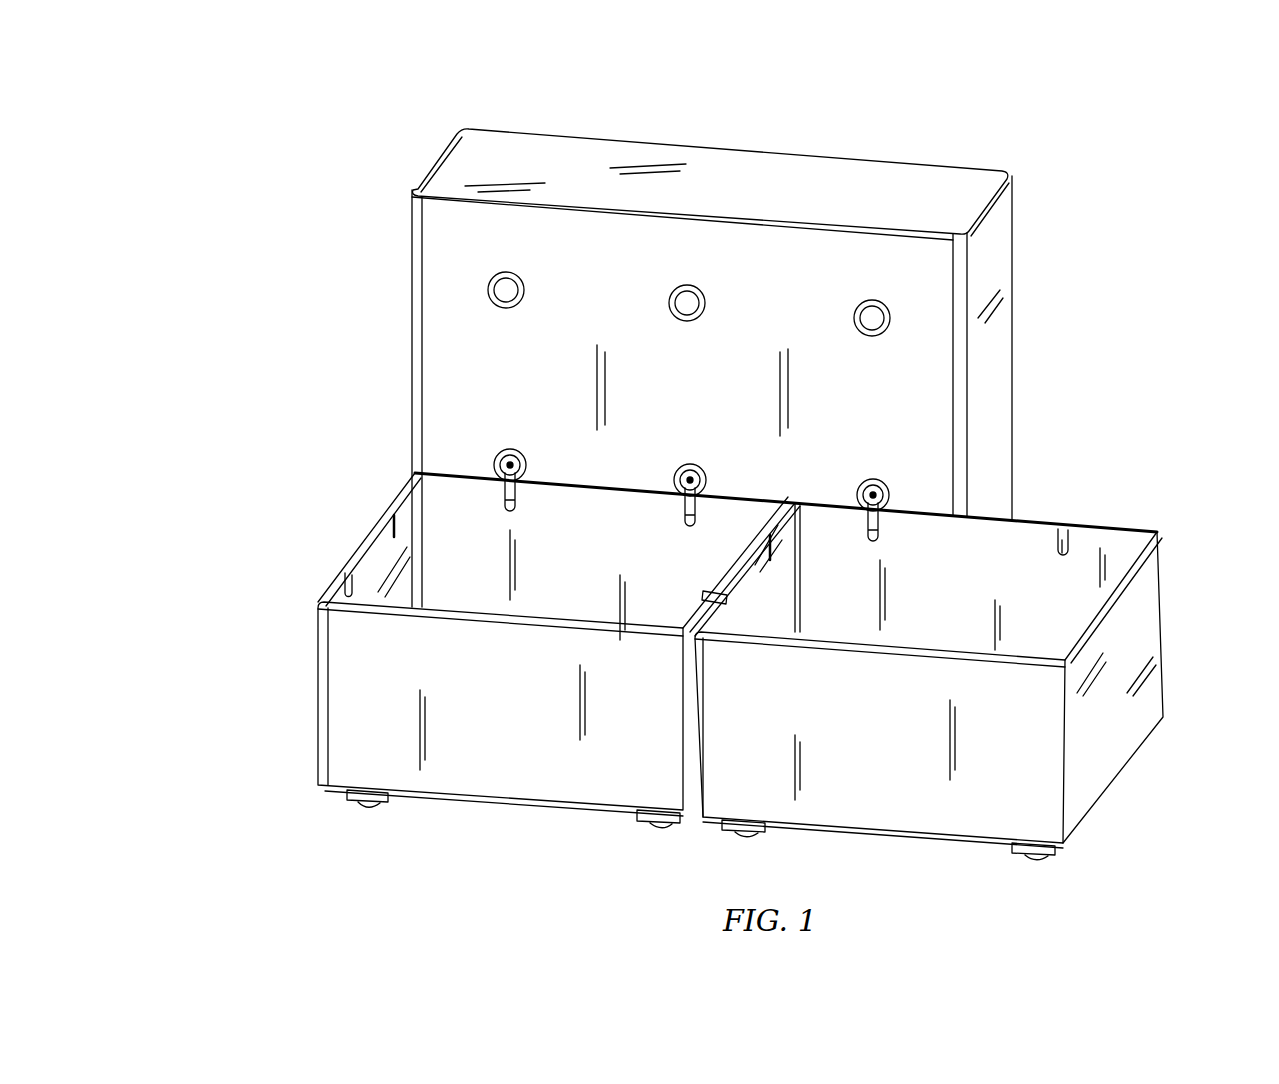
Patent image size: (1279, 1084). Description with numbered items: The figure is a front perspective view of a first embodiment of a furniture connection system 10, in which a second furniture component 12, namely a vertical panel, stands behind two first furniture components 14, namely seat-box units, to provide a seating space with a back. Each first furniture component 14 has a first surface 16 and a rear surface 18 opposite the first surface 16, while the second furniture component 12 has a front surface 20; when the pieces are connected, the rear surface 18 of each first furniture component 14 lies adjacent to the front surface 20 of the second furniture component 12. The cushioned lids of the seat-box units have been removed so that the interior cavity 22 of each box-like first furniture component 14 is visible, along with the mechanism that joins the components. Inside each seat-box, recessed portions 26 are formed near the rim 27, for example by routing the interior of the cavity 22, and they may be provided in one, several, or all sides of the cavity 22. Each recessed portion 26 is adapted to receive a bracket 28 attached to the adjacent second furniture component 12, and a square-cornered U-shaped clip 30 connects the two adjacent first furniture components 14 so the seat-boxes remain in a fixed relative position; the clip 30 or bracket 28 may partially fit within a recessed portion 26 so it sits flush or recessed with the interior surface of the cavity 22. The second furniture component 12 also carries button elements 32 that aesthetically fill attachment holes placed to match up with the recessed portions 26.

The furniture connection system 10 is at (1176, 148).
The second furniture component 12 is at (1013, 265).
The first furniture component 14 is at (317, 748).
The first surface 16 is at (465, 518).
The rear surface 18 is at (1093, 526).
The front surface 20 is at (918, 368).
The interior cavity 22 is at (487, 592).
The recessed portion 26 is at (345, 588).
The rim 27 is at (375, 523).
The bracket 28 is at (897, 512).
The U-shaped clip 30 is at (722, 595).
The button element 32 is at (873, 312).